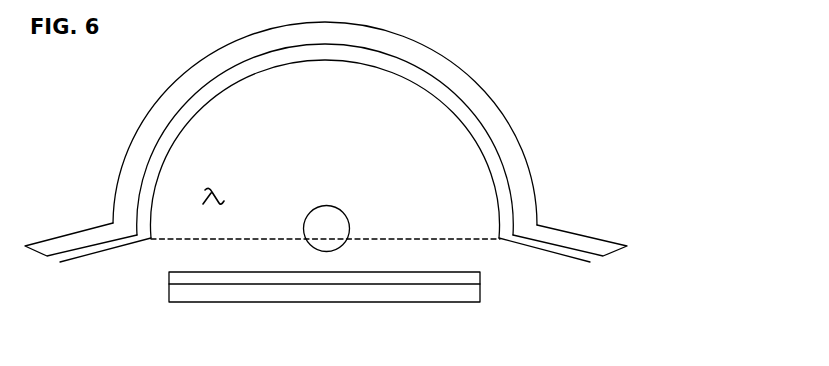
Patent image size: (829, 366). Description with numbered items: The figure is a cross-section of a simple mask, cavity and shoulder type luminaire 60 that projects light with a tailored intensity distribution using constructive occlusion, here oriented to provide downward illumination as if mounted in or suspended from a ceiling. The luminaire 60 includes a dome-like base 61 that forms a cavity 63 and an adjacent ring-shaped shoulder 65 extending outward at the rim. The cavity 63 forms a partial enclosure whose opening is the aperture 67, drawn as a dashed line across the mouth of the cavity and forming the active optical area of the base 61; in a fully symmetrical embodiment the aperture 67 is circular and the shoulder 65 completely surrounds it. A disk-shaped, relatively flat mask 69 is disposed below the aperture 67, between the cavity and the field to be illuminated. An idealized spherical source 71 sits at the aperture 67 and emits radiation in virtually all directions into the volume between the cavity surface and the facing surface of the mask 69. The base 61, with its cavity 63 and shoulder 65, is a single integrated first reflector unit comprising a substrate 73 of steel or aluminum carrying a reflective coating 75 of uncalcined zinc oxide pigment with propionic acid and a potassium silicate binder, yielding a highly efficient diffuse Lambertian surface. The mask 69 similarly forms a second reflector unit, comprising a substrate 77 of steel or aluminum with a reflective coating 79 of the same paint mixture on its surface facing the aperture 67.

The luminaire 60 is at (632, 65).
The base 61 is at (137, 127).
The cavity 63 is at (207, 201).
The shoulder 65 is at (547, 252).
The aperture 67 is at (472, 237).
The mask 69 is at (390, 303).
The source 71 is at (351, 225).
The substrate 73 is at (463, 65).
The reflective coating 75 is at (483, 120).
The substrate 77 is at (165, 296).
The reflective coating 79 is at (167, 283).